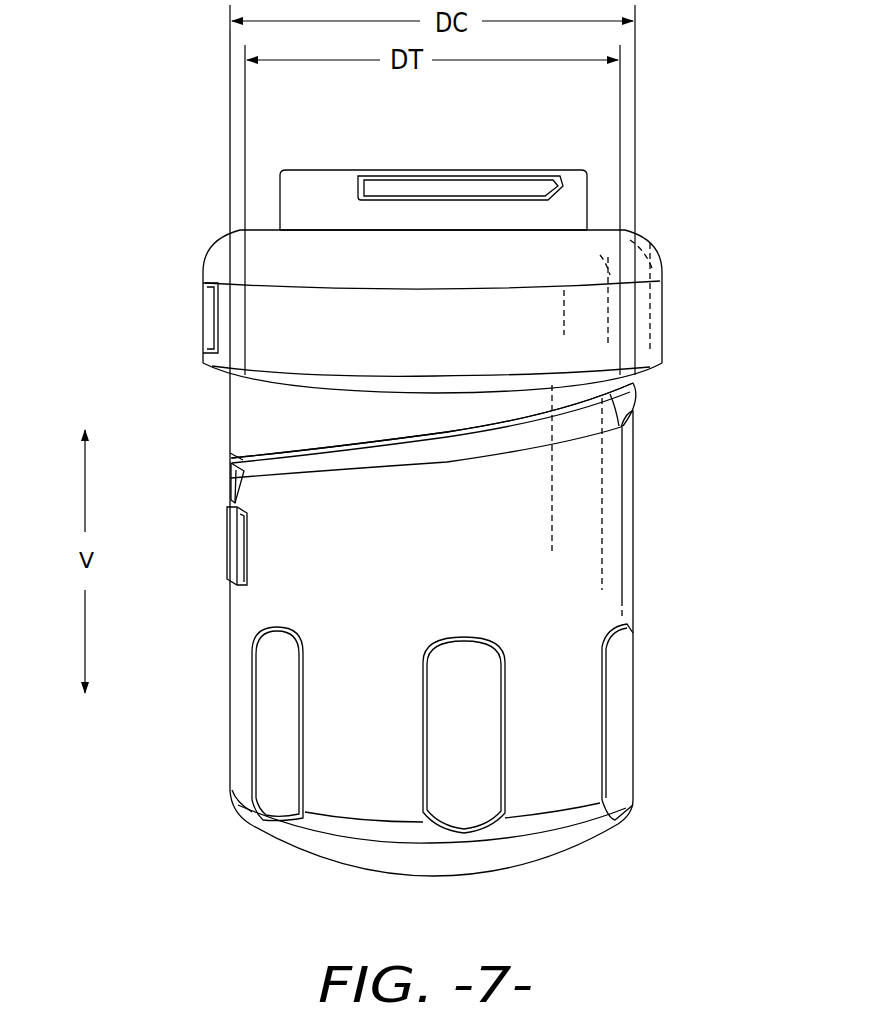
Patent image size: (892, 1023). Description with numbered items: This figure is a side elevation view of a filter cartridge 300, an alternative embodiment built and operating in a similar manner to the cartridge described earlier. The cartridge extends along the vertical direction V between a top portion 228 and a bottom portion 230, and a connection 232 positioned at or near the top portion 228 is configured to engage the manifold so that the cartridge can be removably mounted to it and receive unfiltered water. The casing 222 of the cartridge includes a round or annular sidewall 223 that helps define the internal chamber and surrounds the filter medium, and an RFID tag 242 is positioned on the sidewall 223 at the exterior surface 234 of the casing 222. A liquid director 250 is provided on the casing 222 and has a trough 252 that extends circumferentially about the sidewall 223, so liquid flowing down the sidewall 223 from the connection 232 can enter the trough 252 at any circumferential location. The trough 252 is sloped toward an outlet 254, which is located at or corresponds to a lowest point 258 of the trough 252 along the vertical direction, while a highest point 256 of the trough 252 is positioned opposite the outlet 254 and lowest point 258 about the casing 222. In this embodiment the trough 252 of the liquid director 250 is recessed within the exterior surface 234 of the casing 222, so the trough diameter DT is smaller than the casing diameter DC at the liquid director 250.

The filter cartridge 300 is at (173, 151).
The top portion 228 is at (206, 227).
The connection 232 is at (574, 172).
The highest point 256 is at (650, 416).
The liquid director 250 is at (517, 443).
The trough 252 is at (438, 455).
The lowest point 258 is at (228, 452).
The outlet 254 is at (228, 488).
The RFID tag 242 is at (233, 548).
The sidewall 223 is at (256, 605).
The exterior surface 234 is at (585, 524).
The casing 222 is at (632, 605).
The bottom portion 230 is at (234, 821).